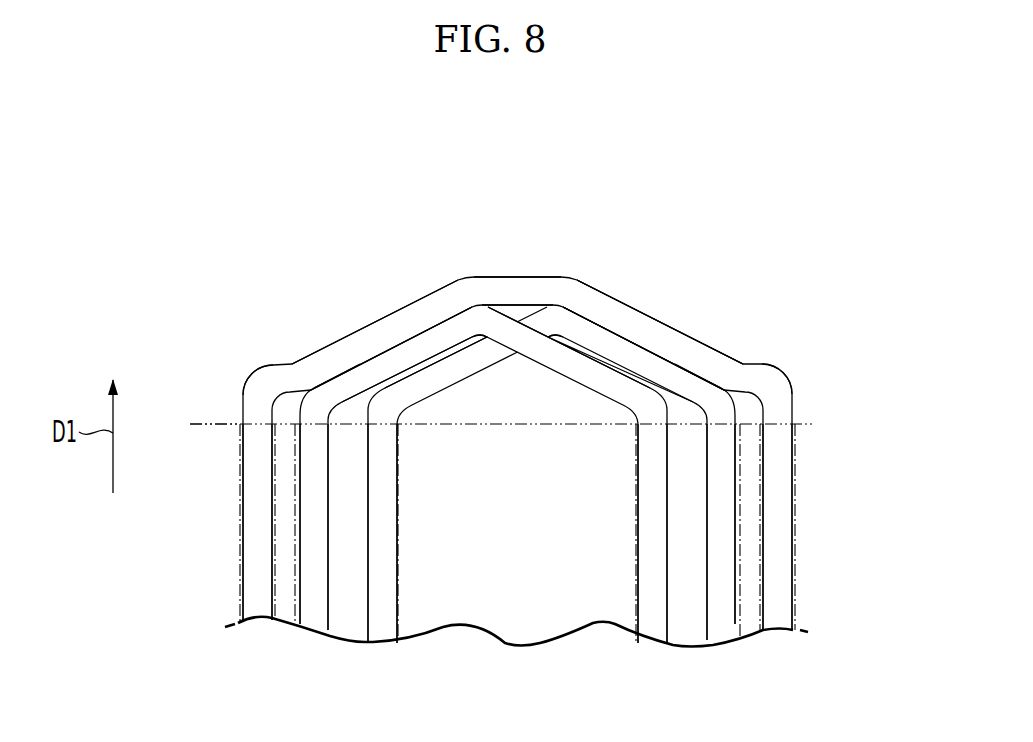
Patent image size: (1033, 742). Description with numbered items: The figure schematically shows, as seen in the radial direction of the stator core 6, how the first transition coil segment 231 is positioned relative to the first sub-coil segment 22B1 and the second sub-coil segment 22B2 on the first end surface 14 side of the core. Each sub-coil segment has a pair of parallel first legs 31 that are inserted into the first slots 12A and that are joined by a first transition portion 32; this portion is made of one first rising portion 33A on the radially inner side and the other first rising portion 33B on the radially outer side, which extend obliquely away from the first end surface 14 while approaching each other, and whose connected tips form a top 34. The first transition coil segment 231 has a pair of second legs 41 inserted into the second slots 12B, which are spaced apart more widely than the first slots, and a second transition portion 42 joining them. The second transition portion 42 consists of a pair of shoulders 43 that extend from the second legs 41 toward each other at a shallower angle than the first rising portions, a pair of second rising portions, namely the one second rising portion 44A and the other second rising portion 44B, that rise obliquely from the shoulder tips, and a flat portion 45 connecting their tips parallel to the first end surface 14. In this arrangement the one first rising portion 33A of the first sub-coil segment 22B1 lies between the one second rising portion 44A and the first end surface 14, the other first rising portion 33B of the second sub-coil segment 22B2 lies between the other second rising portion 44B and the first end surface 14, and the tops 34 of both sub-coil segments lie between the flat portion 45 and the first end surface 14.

The stator core 6 is at (201, 421).
The first slot 12A is at (402, 463).
The second slot 12B is at (237, 517).
The first end surface 14 is at (815, 424).
The first sub-coil segment 22B1 is at (680, 411).
The second sub-coil segment 22B2 is at (350, 412).
The first transition coil segment 231 is at (255, 377).
The first leg 31 is at (312, 603).
The first transition portion 32 is at (350, 358).
The one first rising portion 33A is at (460, 357).
The other first rising portion 33B is at (635, 357).
The top 34 is at (482, 305).
The second leg 41 is at (257, 598).
The second transition portion 42 is at (707, 338).
The shoulder 43 is at (252, 372).
The one second rising portion 44A is at (400, 320).
The other second rising portion 44B is at (617, 315).
The flat portion 45 is at (517, 277).